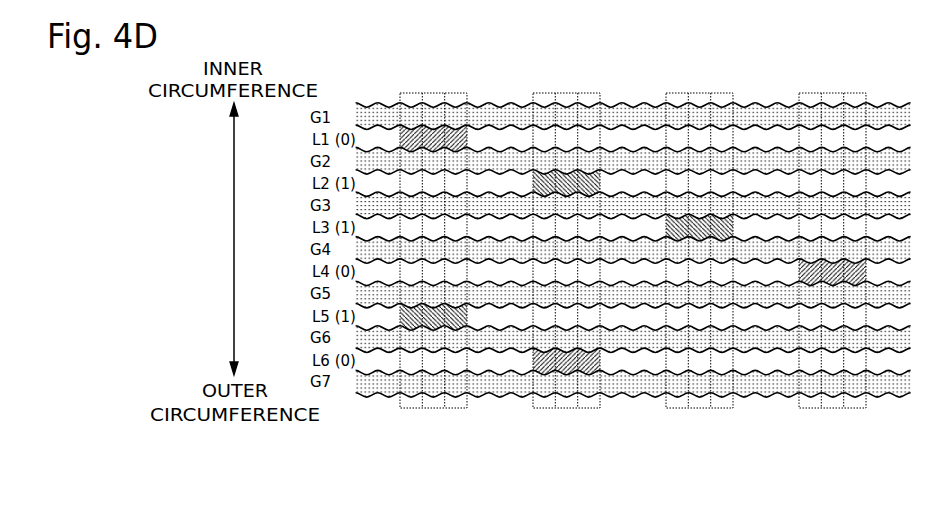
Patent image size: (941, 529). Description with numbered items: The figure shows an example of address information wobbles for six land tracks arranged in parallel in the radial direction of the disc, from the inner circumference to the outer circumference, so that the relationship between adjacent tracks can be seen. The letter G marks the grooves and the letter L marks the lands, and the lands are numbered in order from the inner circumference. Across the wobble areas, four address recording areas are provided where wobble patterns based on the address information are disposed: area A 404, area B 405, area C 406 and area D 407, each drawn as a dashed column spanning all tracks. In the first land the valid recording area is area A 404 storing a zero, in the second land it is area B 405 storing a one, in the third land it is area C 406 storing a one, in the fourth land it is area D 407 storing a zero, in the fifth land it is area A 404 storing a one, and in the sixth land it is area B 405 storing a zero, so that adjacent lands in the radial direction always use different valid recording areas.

The area A 404 is at (467, 93).
The area B 405 is at (600, 93).
The area C 406 is at (733, 93).
The area D 407 is at (866, 93).